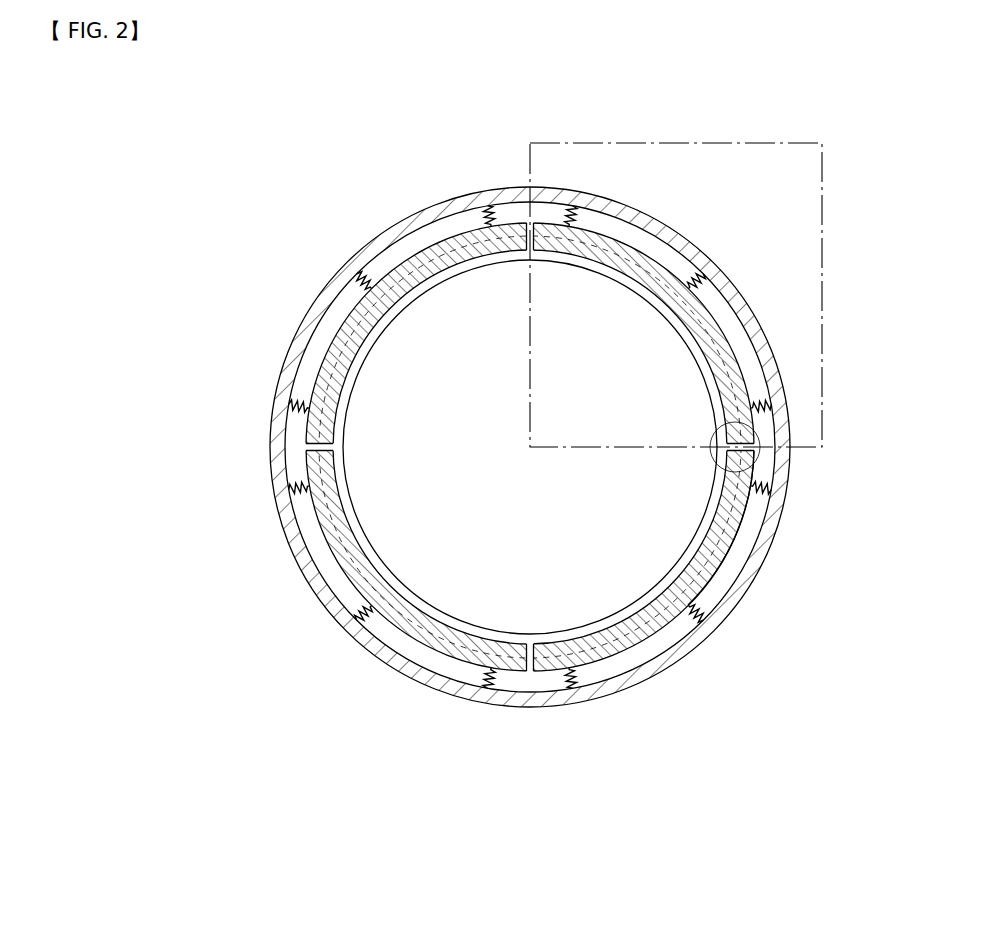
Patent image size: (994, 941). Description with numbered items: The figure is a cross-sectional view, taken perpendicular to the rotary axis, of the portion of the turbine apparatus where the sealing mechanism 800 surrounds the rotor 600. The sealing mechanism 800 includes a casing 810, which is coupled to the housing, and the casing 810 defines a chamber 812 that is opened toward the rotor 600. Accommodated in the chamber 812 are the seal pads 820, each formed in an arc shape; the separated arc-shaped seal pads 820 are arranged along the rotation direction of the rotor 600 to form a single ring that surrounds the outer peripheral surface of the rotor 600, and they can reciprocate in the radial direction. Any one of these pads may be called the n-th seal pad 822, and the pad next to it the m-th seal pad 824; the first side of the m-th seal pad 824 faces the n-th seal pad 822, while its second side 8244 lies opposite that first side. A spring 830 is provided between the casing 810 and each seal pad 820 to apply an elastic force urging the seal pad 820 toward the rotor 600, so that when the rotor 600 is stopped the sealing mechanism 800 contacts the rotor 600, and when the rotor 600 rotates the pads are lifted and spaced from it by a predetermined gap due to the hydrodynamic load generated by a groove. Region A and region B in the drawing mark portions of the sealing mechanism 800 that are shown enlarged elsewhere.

The rotor 600 is at (404, 541).
The sealing mechanism 800 is at (190, 285).
The casing 810 is at (316, 297).
The chamber 812 is at (416, 238).
The seal pad 820 is at (507, 485).
The n-th seal pad 822 is at (676, 300).
The m-th seal pad 824 is at (727, 553).
The second side 8244 is at (531, 680).
The spring 830 is at (288, 414).
The enlarged region A is at (822, 293).
The enlarged region B is at (758, 459).